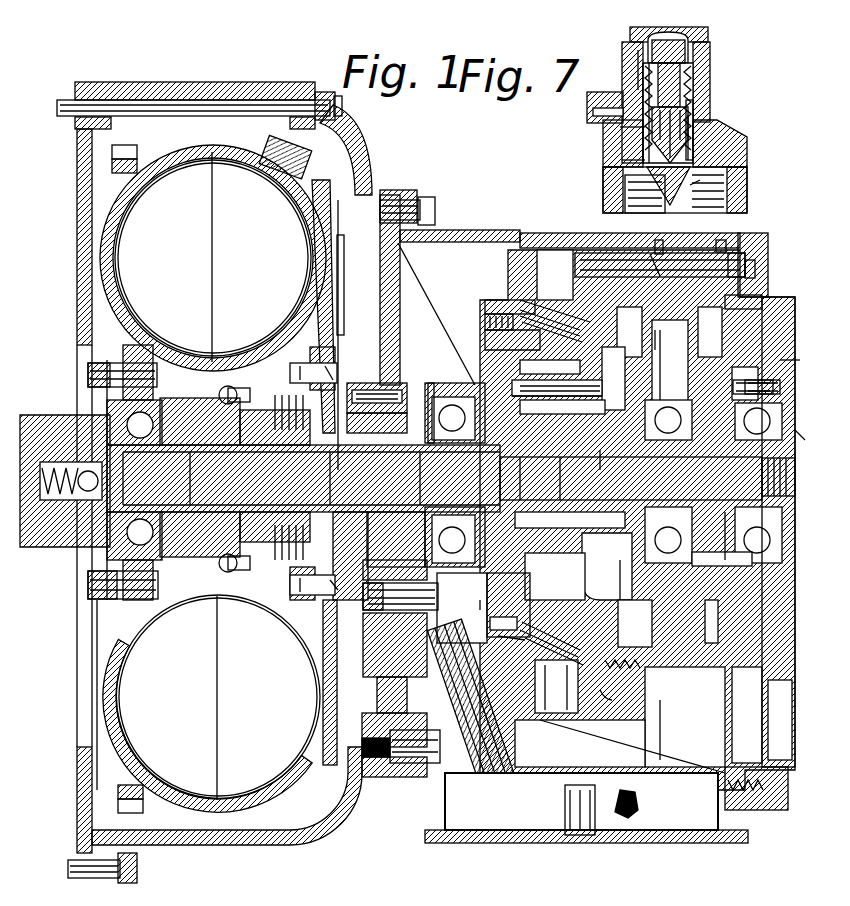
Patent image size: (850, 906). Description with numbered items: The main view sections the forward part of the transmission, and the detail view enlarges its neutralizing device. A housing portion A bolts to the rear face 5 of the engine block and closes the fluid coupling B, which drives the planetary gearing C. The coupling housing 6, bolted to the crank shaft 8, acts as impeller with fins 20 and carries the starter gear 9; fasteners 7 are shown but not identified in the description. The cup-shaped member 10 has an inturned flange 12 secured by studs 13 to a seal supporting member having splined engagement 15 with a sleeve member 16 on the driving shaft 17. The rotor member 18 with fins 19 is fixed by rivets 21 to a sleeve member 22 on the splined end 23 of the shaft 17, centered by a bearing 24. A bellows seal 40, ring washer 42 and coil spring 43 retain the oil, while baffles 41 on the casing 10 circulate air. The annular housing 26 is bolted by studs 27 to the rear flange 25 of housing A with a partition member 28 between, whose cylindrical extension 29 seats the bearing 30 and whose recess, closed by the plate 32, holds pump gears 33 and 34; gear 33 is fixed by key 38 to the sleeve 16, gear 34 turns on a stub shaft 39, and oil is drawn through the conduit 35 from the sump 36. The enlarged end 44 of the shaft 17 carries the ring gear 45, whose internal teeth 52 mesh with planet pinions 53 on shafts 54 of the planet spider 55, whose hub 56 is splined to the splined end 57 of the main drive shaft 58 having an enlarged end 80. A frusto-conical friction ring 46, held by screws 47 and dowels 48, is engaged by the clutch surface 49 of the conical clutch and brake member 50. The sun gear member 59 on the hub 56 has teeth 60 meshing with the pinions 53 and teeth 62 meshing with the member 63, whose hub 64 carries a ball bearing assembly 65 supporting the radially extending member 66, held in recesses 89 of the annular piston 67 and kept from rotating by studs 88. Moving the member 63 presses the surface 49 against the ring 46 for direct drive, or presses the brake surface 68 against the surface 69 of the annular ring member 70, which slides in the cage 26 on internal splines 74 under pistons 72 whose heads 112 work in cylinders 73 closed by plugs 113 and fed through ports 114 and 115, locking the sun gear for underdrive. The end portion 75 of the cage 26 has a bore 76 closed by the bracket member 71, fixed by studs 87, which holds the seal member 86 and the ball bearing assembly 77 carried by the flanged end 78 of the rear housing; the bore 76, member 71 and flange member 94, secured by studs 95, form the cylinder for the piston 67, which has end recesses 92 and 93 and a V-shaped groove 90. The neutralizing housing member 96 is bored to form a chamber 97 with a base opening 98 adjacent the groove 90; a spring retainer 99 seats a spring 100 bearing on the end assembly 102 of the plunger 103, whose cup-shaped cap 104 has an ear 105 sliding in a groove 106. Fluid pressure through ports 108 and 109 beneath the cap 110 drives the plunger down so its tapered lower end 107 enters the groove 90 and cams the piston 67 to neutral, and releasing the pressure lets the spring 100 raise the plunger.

In FIG. 1, the housing portion A is at (213, 82).
In FIG. 1, the fluid coupling B is at (178, 162).
In FIG. 1, the planetary gearing C is at (520, 645).
In FIG. 1, the rear face of the engine block 5 is at (77, 160).
In FIG. 1, the housing portion of the fluid coupling 6 is at (104, 265).
In FIG. 1, the bolt 7 is at (88, 373).
In FIG. 1, the crank shaft 8 is at (48, 415).
In FIG. 1, the starter gear 9 is at (118, 792).
In FIG. 1, the cup-shaped member 10 is at (336, 183).
In FIG. 1, the radially inturned flange 12 is at (318, 335).
In FIG. 1, the studs 13 is at (333, 372).
In FIG. 1, the splined engagement 15 is at (354, 390).
In FIG. 1, the sleeve member 16 is at (360, 452).
In FIG. 1, the driving shaft 17 is at (268, 488).
In FIG. 1, the rotor member 18 is at (290, 335).
In FIG. 1, the fins of the rotor 19 is at (215, 202).
In FIG. 1, the fins of the impeller 20 is at (211, 212).
In FIG. 1, the bolts or rivets 21 is at (220, 393).
In FIG. 1, the sleeve member 22 is at (210, 425).
In FIG. 1, the reduced splined end 23 is at (157, 478).
In FIG. 1, the bearing 24 is at (150, 545).
In FIG. 1, the rear end flange 25 is at (358, 800).
In FIG. 1, the annular housing 26 is at (488, 232).
In FIG. 7, the annular housing 26 is at (612, 150).
In FIG. 1, the studs 27 is at (405, 195).
In FIG. 1, the partition member 28 is at (400, 265).
In FIG. 1, the cylindrical extension 29 is at (452, 405).
In FIG. 1, the bearing 30 is at (432, 385).
In FIG. 1, the plate 32 is at (372, 677).
In FIG. 1, the pump gear 33 is at (403, 400).
In FIG. 1, the pump gear 34 is at (408, 677).
In FIG. 1, the conduit 35 is at (480, 694).
In FIG. 1, the sump 36 is at (455, 818).
In FIG. 1, the key 38 is at (428, 452).
In FIG. 1, the stub shaft 39 is at (364, 600).
In FIG. 1, the bellows type seal 40 is at (290, 392).
In FIG. 1, the baffles 41 is at (344, 290).
In FIG. 1, the ring washer 42 is at (270, 555).
In FIG. 1, the coil spring 43 is at (292, 584).
In FIG. 1, the radially enlarged end 44 is at (462, 608).
In FIG. 1, the ring gear 45 is at (484, 340).
In FIG. 1, the frusto-conical friction ring 46 is at (492, 315).
In FIG. 1, the screws 47 is at (484, 322).
In FIG. 1, the dowels 48 is at (490, 637).
In FIG. 1, the clutch surface 49 is at (518, 312).
In FIG. 1, the conical clutch and brake member 50 is at (618, 582).
In FIG. 1, the internal ring gear teeth 52 is at (530, 372).
In FIG. 1, the planet pinions 53 is at (557, 383).
In FIG. 1, the shafts 54 is at (557, 406).
In FIG. 1, the planet spider 55 is at (470, 600).
In FIG. 1, the hub portion 56 is at (598, 452).
In FIG. 1, the splined end 57 is at (522, 478).
In FIG. 1, the main drive shaft 58 is at (714, 483).
In FIG. 1, the sun gear member 59 is at (562, 455).
In FIG. 1, the teeth 60 is at (560, 535).
In FIG. 1, the axially spaced set of teeth 62 is at (605, 420).
In FIG. 1, the member 63 is at (640, 550).
In FIG. 1, the hub portion 64 is at (724, 425).
In FIG. 1, the ball bearing assembly 65 is at (728, 390).
In FIG. 1, the radially extending member 66 is at (662, 372).
In FIG. 1, the annular piston 67 is at (680, 662).
In FIG. 7, the annular piston 67 is at (720, 170).
In FIG. 1, the external conical brake surface 68 is at (530, 302).
In FIG. 1, the brake surface 69 is at (556, 686).
In FIG. 1, the annular ring member 70 is at (580, 248).
In FIG. 1, the bracket member 71 is at (722, 557).
In FIG. 1, the pistons 72 is at (622, 250).
In FIG. 1, the cylinders 73 is at (655, 252).
In FIG. 1, the internal splines 74 is at (552, 722).
In FIG. 1, the end portion 75 is at (728, 695).
In FIG. 1, the bore 76 is at (706, 666).
In FIG. 1, the ball bearing assembly 77 is at (780, 368).
In FIG. 1, the flanged end 78 is at (765, 310).
In FIG. 1, the radially enlarged outer end 80 is at (794, 430).
In FIG. 1, the seal member 86 is at (722, 535).
In FIG. 1, the studs 87 is at (778, 380).
In FIG. 1, the studs 88 is at (721, 621).
In FIG. 1, the recesses 89 is at (648, 662).
In FIG. 1, the V-shaped groove 90 is at (655, 332).
In FIG. 7, the V-shaped groove 90 is at (693, 188).
In FIG. 1, the axial recess 92 is at (629, 332).
In FIG. 1, the axial recess 93 is at (715, 332).
In FIG. 1, the flange member 94 is at (635, 623).
In FIG. 1, the studs 95 is at (625, 698).
In FIG. 7, the housing member 96 is at (710, 48).
In FIG. 7, the chamber 97 is at (615, 138).
In FIG. 7, the opening 98 is at (620, 162).
In FIG. 7, the spring retainer 99 is at (708, 140).
In FIG. 7, the spring 100 is at (708, 78).
In FIG. 7, the end assembly 102 is at (708, 62).
In FIG. 7, the neutralizing plunger 103 is at (640, 92).
In FIG. 7, the cup shaped cap 104 is at (708, 92).
In FIG. 7, the ear 105 is at (712, 108).
In FIG. 7, the groove 106 is at (718, 122).
In FIG. 7, the tapered lower end 107 is at (660, 185).
In FIG. 7, the port 108 is at (592, 103).
In FIG. 7, the port 109 is at (634, 69).
In FIG. 7, the cap 110 is at (690, 30).
In FIG. 1, the piston heads 112 is at (745, 250).
In FIG. 1, the plug 113 is at (753, 262).
In FIG. 1, the port 114 is at (722, 242).
In FIG. 1, the port 115 is at (660, 242).